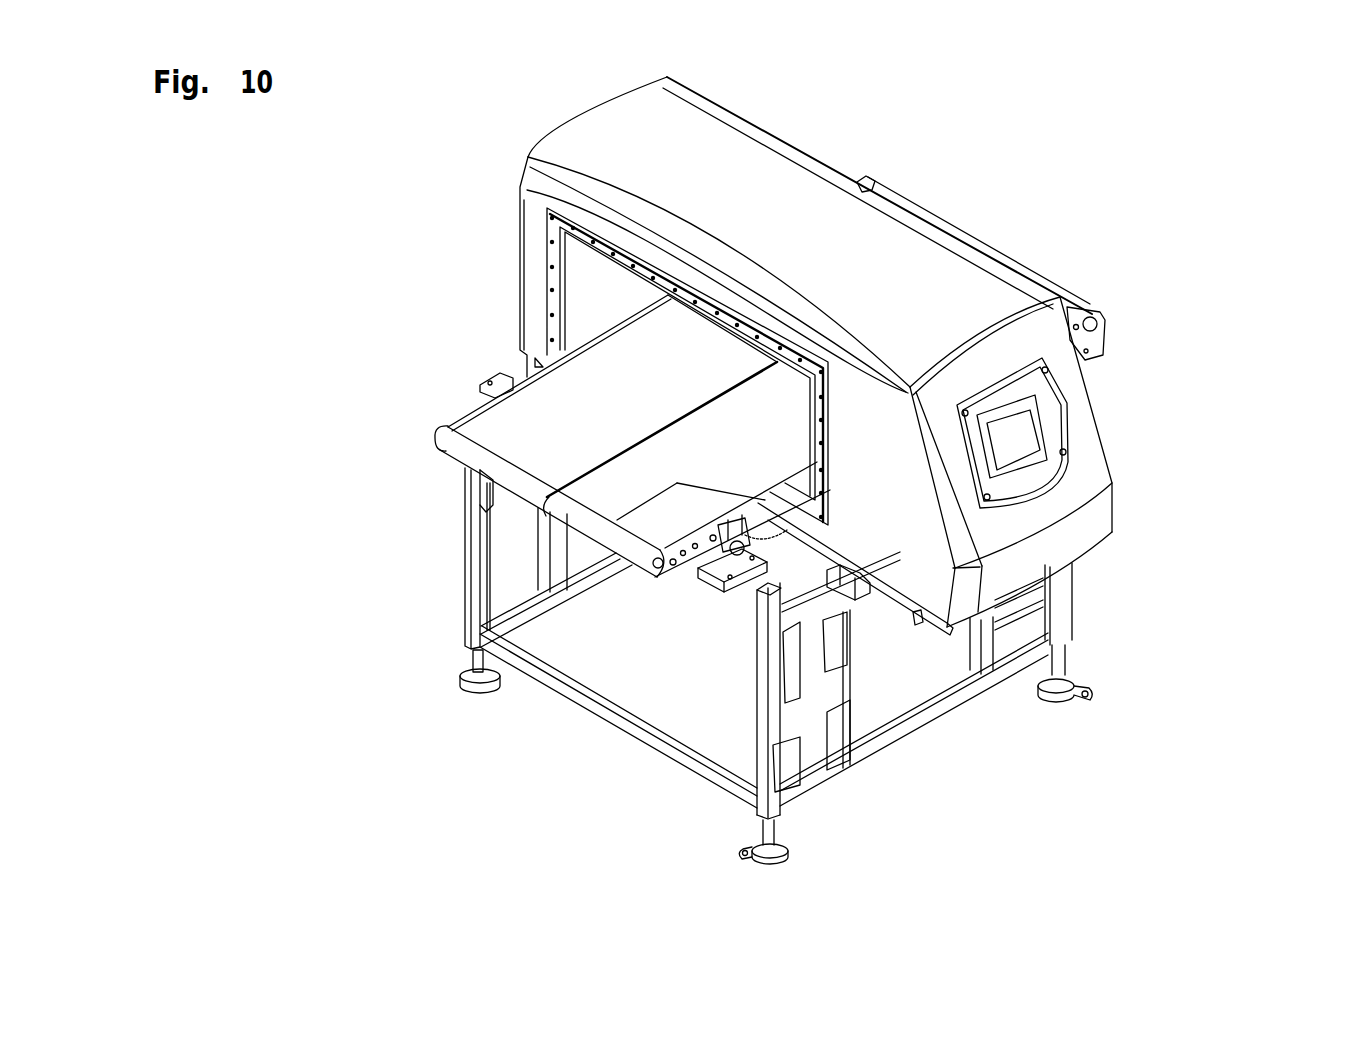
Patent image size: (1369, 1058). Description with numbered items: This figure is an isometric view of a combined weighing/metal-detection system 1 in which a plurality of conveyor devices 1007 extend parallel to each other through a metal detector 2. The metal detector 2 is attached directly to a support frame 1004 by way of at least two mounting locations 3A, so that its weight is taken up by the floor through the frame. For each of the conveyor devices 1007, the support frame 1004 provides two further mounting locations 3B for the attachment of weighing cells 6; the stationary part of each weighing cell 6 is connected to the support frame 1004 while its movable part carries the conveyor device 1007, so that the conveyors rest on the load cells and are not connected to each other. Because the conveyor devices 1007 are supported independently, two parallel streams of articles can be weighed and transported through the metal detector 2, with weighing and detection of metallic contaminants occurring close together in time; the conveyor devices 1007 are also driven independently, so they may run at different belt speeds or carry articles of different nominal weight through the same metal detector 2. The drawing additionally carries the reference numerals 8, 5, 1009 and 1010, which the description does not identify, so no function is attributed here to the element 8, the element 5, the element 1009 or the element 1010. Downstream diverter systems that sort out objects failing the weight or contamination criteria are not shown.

The combined weighing/metal-detection system 1 is at (447, 128).
The metal detector 2 is at (1113, 563).
The conveyor devices 1007 is at (945, 178).
The tunnel opening 8 is at (600, 296).
The display unit 5 is at (1060, 408).
The conveyor belt 1010 is at (493, 467).
The belt support frame 1009 is at (677, 483).
The weighing cells 6 is at (758, 548).
The mounting locations for weighing cells 3B is at (722, 562).
The mounting locations for metal detector 3A is at (865, 595).
The support frame 1004 is at (568, 703).